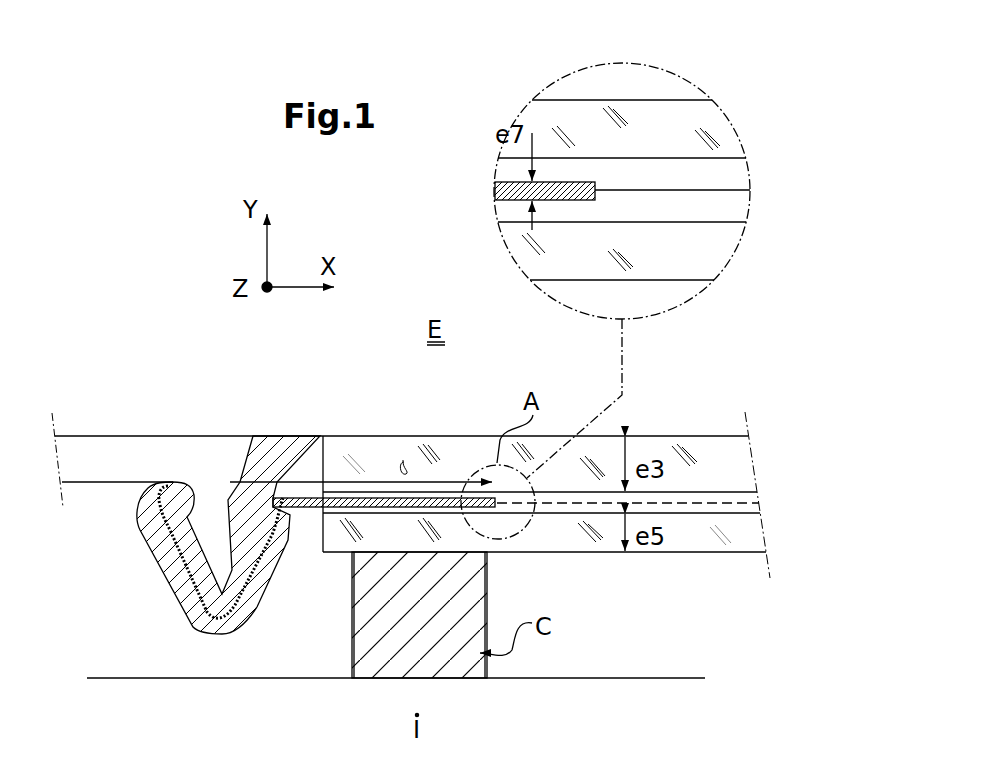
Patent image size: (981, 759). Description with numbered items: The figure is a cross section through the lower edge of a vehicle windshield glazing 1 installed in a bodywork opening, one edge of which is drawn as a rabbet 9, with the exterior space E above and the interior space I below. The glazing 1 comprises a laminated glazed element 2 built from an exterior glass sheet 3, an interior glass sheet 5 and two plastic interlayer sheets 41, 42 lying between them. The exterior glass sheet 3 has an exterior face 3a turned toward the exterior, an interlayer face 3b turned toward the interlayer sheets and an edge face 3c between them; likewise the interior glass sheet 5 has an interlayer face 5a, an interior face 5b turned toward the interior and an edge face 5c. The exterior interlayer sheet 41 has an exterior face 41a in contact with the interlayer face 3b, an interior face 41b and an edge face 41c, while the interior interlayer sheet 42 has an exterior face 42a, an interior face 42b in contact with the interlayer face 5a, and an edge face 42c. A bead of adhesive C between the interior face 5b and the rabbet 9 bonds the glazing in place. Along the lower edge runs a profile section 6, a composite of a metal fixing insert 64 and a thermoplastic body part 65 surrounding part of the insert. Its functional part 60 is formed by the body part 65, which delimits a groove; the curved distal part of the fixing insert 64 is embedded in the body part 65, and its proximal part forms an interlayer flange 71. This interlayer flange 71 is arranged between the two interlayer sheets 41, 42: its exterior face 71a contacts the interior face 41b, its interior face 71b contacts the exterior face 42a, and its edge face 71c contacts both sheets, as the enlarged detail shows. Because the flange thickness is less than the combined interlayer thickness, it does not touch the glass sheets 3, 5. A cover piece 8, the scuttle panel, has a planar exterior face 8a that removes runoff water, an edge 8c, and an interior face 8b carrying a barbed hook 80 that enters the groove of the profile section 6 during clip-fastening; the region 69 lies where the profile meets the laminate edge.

In FIG. 1, the glazing 1 is at (375, 385).
In FIG. 1, the laminated glazed element 2 is at (686, 409).
In FIG. 1, the exterior glass sheet 3 is at (437, 435).
In FIG. 1A, the exterior glass sheet 3 is at (647, 117).
In FIG. 1, the exterior face 3a is at (460, 433).
In FIG. 1A, the exterior face 3a is at (577, 97).
In FIG. 1A, the interlayer face 3b is at (551, 103).
In FIG. 1, the edge face 3c is at (333, 481).
In FIG. 1, the interior glass sheet 5 is at (377, 553).
In FIG. 1A, the interlayer face 5a is at (493, 192).
In FIG. 1, the interior face 5b is at (468, 555).
In FIG. 1A, the interior face 5b is at (593, 283).
In FIG. 1, the edge face 5c is at (311, 550).
In FIG. 1, the profile section 6 is at (153, 598).
In FIG. 1, the cover piece 8 is at (135, 398).
In FIG. 1, the exterior face 8a is at (97, 433).
In FIG. 1, the interior face 8b is at (100, 486).
In FIG. 1, the edge of panel 8c is at (241, 452).
In FIG. 1, the rabbet 9 is at (585, 679).
In FIG. 1, the exterior interlayer sheet 41 is at (758, 492).
In FIG. 1A, the exterior face 41a is at (702, 175).
In FIG. 1A, the interior face 41b is at (740, 186).
In FIG. 1, the edge face 41c is at (315, 490).
In FIG. 1, the interior interlayer sheet 42 is at (760, 513).
In FIG. 1A, the exterior face 42a is at (734, 201).
In FIG. 1A, the interior face 42b is at (695, 214).
In FIG. 1, the edge face 42c is at (273, 520).
In FIG. 1, the functional part 60 is at (220, 648).
In FIG. 1, the fixing insert 64 is at (257, 610).
In FIG. 1, the body part 65 is at (195, 633).
In FIG. 1, the adhesive 69 is at (310, 458).
In FIG. 1, the interlayer flange 71 is at (406, 517).
In FIG. 1A, the exterior face 71a is at (577, 180).
In FIG. 1A, the interior face 71b is at (575, 202).
In FIG. 1A, the edge face 71c is at (598, 196).
In FIG. 1, the barbed hook 80 is at (150, 563).